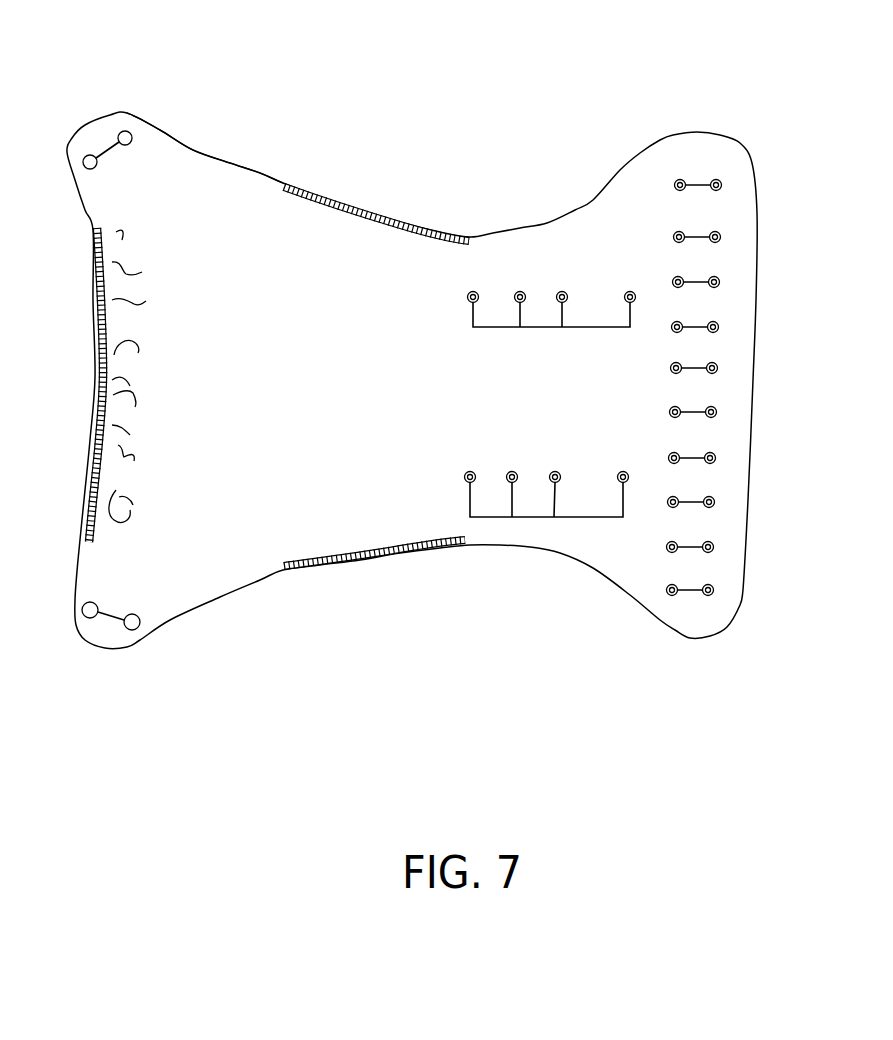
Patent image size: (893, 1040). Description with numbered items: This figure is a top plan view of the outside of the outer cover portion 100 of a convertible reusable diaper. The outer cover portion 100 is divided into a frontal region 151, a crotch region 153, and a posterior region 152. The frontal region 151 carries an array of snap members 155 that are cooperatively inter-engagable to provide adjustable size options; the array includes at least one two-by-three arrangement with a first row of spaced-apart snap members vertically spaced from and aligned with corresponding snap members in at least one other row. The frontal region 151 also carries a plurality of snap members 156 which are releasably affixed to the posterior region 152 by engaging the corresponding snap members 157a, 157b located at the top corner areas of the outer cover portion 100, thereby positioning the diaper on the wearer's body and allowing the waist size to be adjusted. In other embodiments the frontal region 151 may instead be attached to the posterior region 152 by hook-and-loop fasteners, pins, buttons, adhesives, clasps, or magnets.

The outer cover portion 100 is at (470, 97).
The frontal region 151 is at (642, 220).
The posterior region 152 is at (208, 242).
The crotch region 153 is at (397, 288).
The array of snap members 155 is at (593, 327).
The snap members 156 is at (698, 185).
The snap member 157a is at (107, 150).
The snap member 157b is at (112, 614).